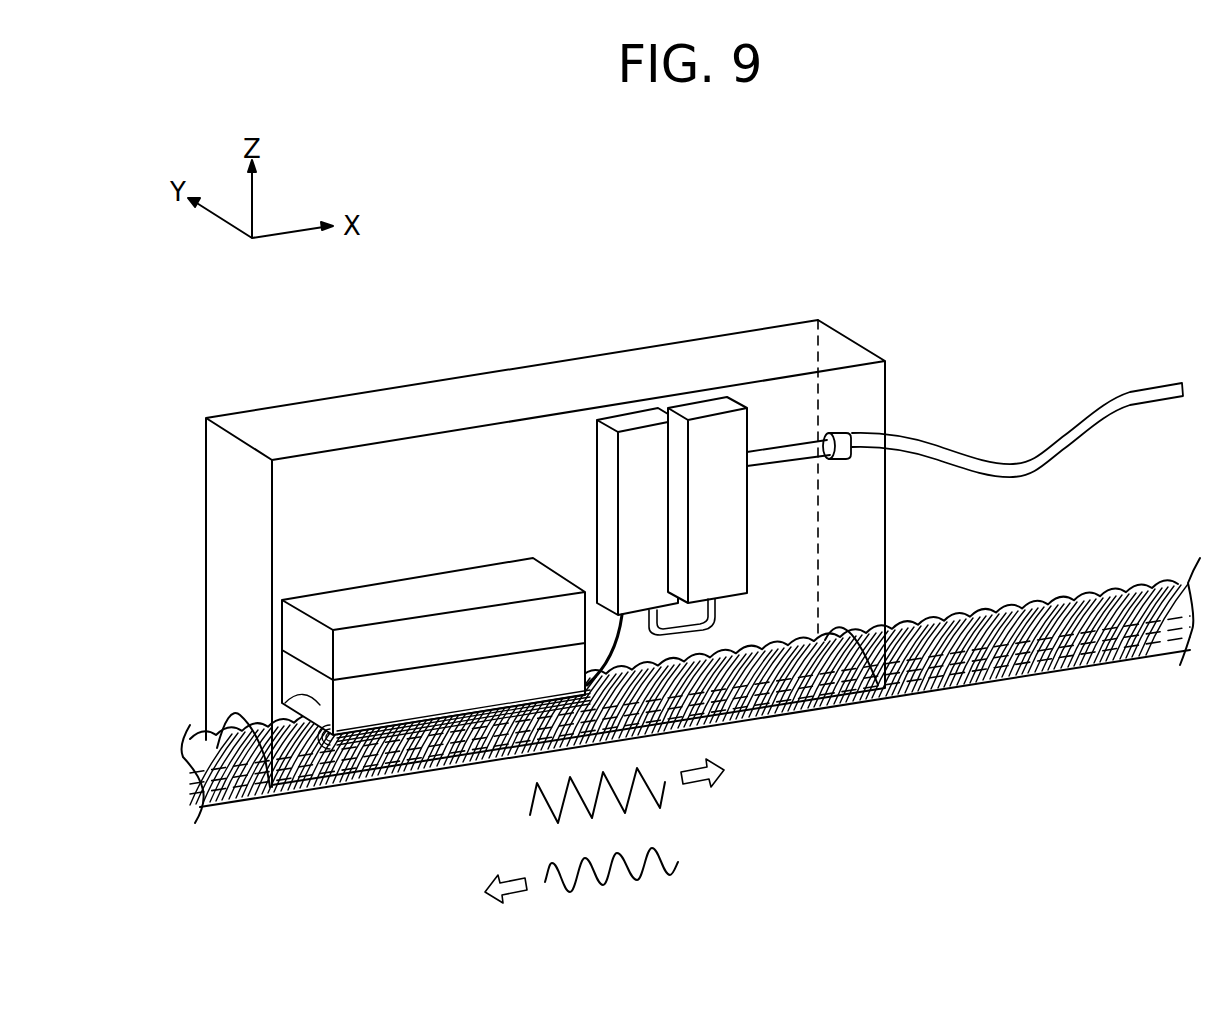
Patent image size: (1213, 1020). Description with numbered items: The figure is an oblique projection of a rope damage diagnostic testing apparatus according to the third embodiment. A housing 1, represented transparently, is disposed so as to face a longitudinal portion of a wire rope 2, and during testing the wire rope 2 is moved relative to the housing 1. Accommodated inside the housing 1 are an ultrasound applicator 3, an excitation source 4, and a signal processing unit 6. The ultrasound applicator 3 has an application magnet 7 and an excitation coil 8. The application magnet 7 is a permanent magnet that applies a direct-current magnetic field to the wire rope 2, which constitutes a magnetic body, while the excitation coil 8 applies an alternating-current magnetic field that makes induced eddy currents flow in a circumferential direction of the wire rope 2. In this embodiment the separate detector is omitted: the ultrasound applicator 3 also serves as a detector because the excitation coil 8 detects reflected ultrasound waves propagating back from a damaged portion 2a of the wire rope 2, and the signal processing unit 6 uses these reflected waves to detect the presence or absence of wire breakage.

The housing 1 is at (518, 387).
The wire rope 2 is at (242, 800).
The damaged portion 2a is at (712, 695).
The ultrasound applicator 3 is at (325, 590).
The excitation source 4 is at (650, 453).
The signal processing unit 6 is at (717, 437).
The application magnet 7 is at (397, 590).
The excitation coil 8 is at (383, 737).